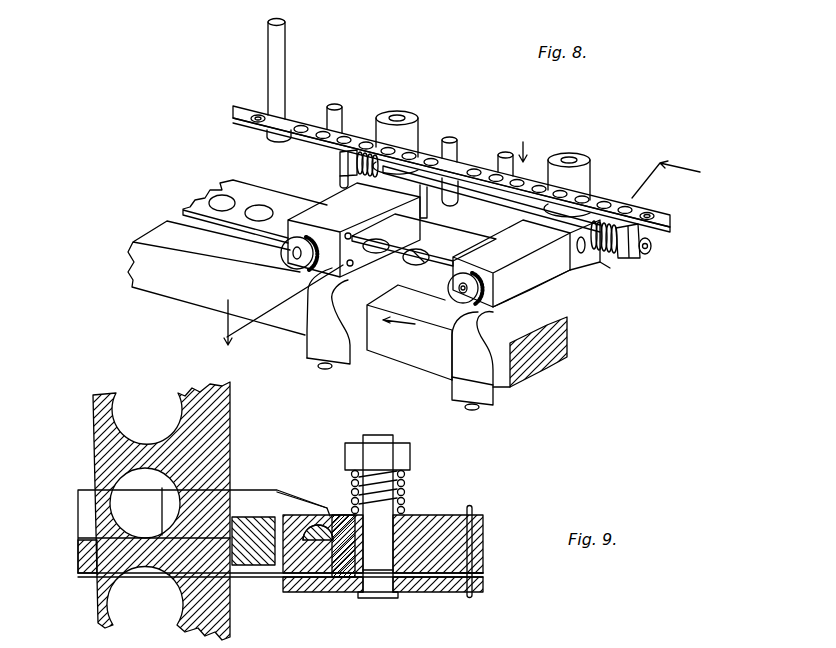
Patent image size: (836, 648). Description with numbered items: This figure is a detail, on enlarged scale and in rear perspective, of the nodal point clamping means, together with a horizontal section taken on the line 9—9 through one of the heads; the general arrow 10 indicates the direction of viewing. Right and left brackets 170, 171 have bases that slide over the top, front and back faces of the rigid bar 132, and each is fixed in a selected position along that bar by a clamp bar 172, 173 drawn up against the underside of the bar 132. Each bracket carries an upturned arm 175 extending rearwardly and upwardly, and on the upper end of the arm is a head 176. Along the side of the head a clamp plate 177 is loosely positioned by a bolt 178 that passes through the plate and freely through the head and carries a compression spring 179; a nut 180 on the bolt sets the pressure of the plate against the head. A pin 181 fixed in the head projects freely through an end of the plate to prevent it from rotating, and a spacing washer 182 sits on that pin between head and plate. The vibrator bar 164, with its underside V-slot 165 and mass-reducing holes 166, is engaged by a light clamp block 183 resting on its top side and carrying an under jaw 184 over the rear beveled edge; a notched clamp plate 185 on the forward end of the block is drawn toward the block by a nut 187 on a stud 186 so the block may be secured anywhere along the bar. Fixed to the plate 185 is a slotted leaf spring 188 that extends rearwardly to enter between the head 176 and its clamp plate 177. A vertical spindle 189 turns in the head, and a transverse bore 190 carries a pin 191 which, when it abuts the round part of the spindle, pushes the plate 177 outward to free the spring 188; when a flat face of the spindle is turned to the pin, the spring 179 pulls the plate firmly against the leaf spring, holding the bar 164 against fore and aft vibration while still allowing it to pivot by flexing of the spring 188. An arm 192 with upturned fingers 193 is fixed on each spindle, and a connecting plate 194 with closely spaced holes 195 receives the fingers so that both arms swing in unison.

In FIG. 8, the section line 9— 9 is at (374, 234).
In FIG. 8, the direction arrow / apparatus 10 is at (557, 251).
In FIG. 8, the rigid bar 132 is at (160, 283).
In FIG. 8, the vibrator bar 164 is at (255, 180).
In FIG. 9, the vibrator bar 164 is at (230, 412).
In FIG. 8, the slot 165 is at (222, 198).
In FIG. 9, the holes 166 is at (140, 400).
In FIG. 8, the right bracket 170 is at (357, 320).
In FIG. 8, the left bracket 171 is at (565, 333).
In FIG. 8, the clamp bar 172 is at (357, 358).
In FIG. 8, the clamp bar 173 is at (500, 402).
In FIG. 8, the upturned arm 175 is at (576, 280).
In FIG. 8, the head 176 is at (430, 145).
In FIG. 9, the head 176 is at (440, 520).
In FIG. 8, the clamp plate 177 is at (442, 223).
In FIG. 9, the clamp plate 177 is at (437, 586).
In FIG. 8, the bolt 178 is at (652, 248).
In FIG. 9, the bolt 178 is at (382, 432).
In FIG. 8, the compression spring 179 is at (612, 253).
In FIG. 9, the compression spring 179 is at (406, 483).
In FIG. 8, the nut 180 is at (644, 257).
In FIG. 9, the nut 180 is at (406, 452).
In FIG. 9, the pin 181 is at (473, 538).
In FIG. 9, the spacing washer 182 is at (480, 574).
In FIG. 8, the clamp block 183 is at (565, 292).
In FIG. 9, the clamp block 183 is at (243, 523).
In FIG. 8, the under jaw 184 is at (612, 262).
In FIG. 8, the clamp plate 185 is at (330, 208).
In FIG. 9, the clamp plate 185 is at (78, 553).
In FIG. 8, the stud 186 is at (460, 300).
In FIG. 8, the nut 187 is at (457, 290).
In FIG. 8, the leaf spring 188 is at (355, 226).
In FIG. 9, the leaf spring 188 is at (258, 578).
In FIG. 8, the vertical spindle 189 is at (397, 116).
In FIG. 9, the vertical spindle 189 is at (310, 512).
In FIG. 9, the transverse bore 190 is at (318, 512).
In FIG. 9, the pin 191 is at (338, 578).
In FIG. 8, the arm 192 is at (353, 127).
In FIG. 8, the upturned fingers 193 is at (283, 75).
In FIG. 8, the connecting plate 194 is at (290, 114).
In FIG. 8, the holes 195 is at (240, 117).